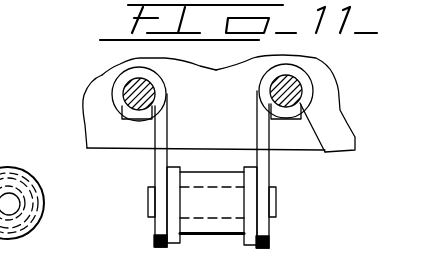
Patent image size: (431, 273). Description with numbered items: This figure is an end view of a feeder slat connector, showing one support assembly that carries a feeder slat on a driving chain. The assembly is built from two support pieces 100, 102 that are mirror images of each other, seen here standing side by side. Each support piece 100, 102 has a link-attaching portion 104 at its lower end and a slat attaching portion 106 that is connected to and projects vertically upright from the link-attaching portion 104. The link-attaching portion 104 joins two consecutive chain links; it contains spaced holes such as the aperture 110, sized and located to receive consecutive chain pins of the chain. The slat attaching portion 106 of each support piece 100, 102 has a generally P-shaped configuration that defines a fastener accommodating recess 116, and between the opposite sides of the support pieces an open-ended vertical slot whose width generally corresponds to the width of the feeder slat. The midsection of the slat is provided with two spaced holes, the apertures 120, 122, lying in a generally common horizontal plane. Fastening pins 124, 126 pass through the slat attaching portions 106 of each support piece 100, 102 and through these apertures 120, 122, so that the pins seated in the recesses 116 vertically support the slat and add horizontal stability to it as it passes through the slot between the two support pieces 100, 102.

The support piece 100 is at (150, 236).
The support piece 102 is at (274, 230).
The link-attaching portion 104 is at (156, 163).
The slat attaching portion 106 is at (140, 67).
The aperture 110 is at (147, 203).
The fastener accommodating recess 116 is at (128, 83).
The aperture 120 is at (127, 100).
The aperture 122 is at (325, 152).
The fastening pin 124 is at (102, 75).
The fastening pin 126 is at (310, 107).